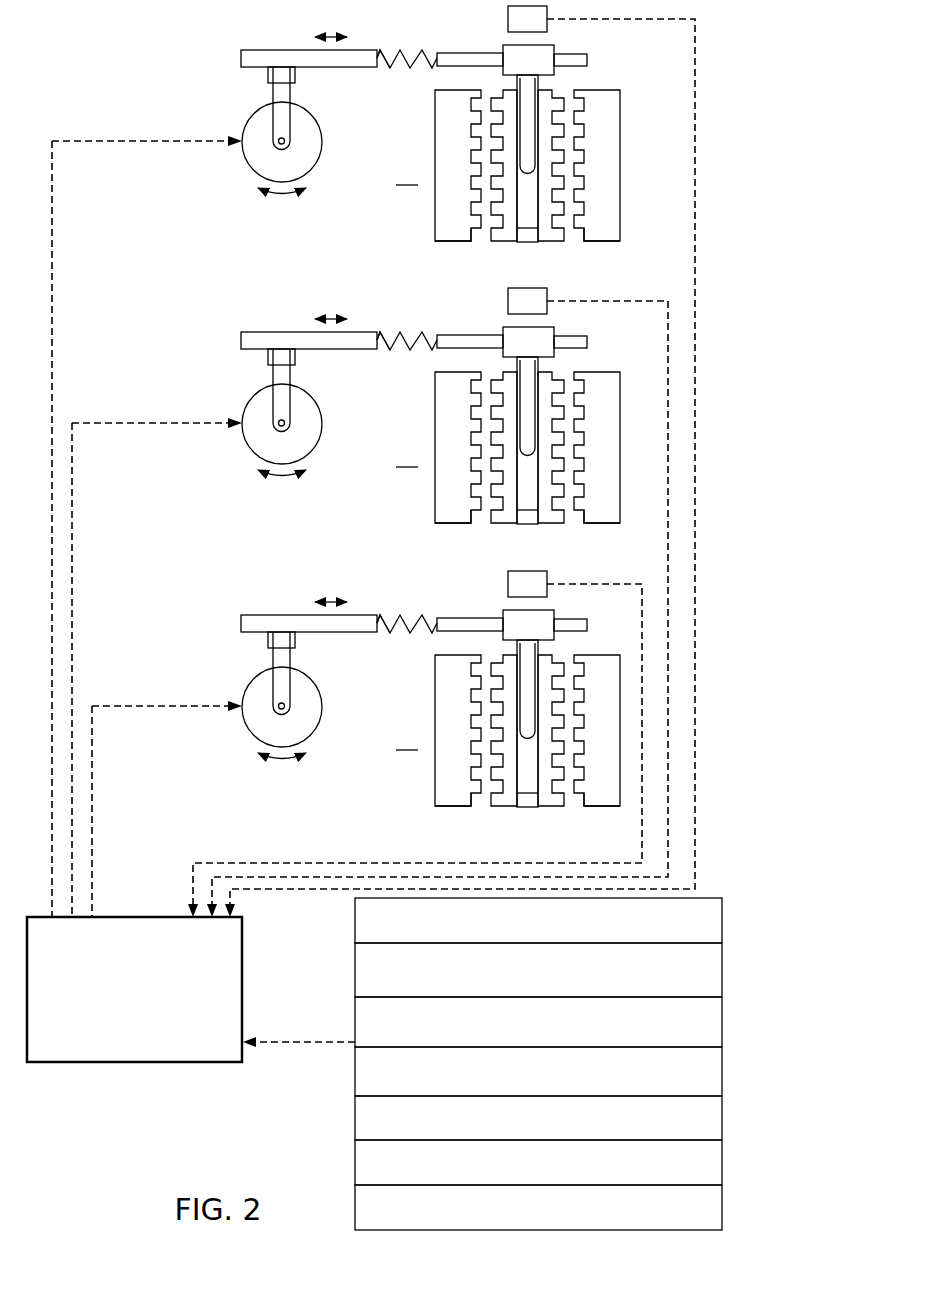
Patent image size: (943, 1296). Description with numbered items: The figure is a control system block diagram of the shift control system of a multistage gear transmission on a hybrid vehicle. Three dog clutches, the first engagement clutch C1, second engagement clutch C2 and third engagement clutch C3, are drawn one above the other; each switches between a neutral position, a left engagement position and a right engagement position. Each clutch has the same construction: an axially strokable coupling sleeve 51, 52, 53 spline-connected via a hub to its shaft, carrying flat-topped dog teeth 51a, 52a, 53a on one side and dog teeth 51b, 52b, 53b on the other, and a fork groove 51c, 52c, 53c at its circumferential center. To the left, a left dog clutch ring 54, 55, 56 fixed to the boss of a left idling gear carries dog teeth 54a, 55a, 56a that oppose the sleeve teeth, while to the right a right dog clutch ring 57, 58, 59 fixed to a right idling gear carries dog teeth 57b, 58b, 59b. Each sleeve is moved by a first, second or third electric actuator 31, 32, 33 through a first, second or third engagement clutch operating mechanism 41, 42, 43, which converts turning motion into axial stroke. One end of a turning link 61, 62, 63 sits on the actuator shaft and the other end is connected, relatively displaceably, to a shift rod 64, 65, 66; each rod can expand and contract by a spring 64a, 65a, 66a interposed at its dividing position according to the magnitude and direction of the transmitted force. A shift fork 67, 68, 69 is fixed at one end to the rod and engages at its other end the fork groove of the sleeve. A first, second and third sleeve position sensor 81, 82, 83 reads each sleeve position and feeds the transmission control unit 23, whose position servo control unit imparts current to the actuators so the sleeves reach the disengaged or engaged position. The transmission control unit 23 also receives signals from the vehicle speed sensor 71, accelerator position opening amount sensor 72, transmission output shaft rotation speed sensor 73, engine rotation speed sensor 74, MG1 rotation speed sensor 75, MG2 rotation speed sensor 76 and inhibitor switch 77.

The transmission control unit 23 is at (244, 922).
The first electric actuator 31 is at (252, 113).
The second electric actuator 32 is at (258, 420).
The third electric actuator 33 is at (258, 703).
The first engagement clutch operating mechanism 41 is at (363, 49).
The second engagement clutch operating mechanism 42 is at (311, 319).
The third engagement clutch operating mechanism 43 is at (311, 602).
The coupling sleeve 51 is at (502, 88).
The dog teeth 51a is at (494, 243).
The dog teeth 51b is at (561, 243).
The fork groove 51c is at (527, 229).
The coupling sleeve 52 is at (492, 436).
The dog teeth 52a is at (505, 470).
The dog teeth 52b is at (551, 470).
The fork groove 52c is at (530, 529).
The coupling sleeve 53 is at (492, 719).
The dog teeth 53a is at (505, 753).
The dog teeth 53b is at (551, 753).
The fork groove 53c is at (530, 812).
The left dog clutch ring 54 is at (433, 140).
The dog teeth 54a is at (473, 243).
The left dog clutch ring 55 is at (427, 447).
The dog teeth 55a is at (454, 539).
The left dog clutch ring 56 is at (427, 730).
The dog teeth 56a is at (454, 822).
The right dog clutch ring 57 is at (600, 88).
The dog teeth 57b is at (579, 243).
The right dog clutch ring 58 is at (609, 424).
The dog teeth 58b is at (597, 539).
The right dog clutch ring 59 is at (609, 707).
The dog teeth 59b is at (597, 822).
The turning link 61 is at (284, 98).
The turning link 62 is at (309, 390).
The turning link 63 is at (309, 673).
The shift rod 64 is at (378, 47).
The spring 64a is at (390, 69).
The shift rod 65 is at (409, 322).
The spring 65a is at (387, 368).
The shift rod 66 is at (409, 605).
The spring 66a is at (387, 651).
The shift fork 67 is at (533, 60).
The shift fork 68 is at (560, 331).
The shift fork 69 is at (560, 614).
The vehicle speed sensor 71 is at (723, 917).
The accelerator position opening amount sensor 72 is at (723, 964).
The transmission output shaft rotation speed sensor 73 is at (723, 1017).
The engine rotation speed sensor 74 is at (723, 1064).
The MG1 rotation speed sensor 75 is at (723, 1112).
The MG2 rotation speed sensor 76 is at (723, 1159).
The inhibitor switch 77 is at (723, 1208).
The first sleeve position sensor 81 is at (508, 20).
The second sleeve position sensor 82 is at (501, 301).
The third sleeve position sensor 83 is at (501, 584).
The first engagement clutch C1 is at (509, 165).
The second engagement clutch C2 is at (509, 447).
The third engagement clutch C3 is at (509, 730).